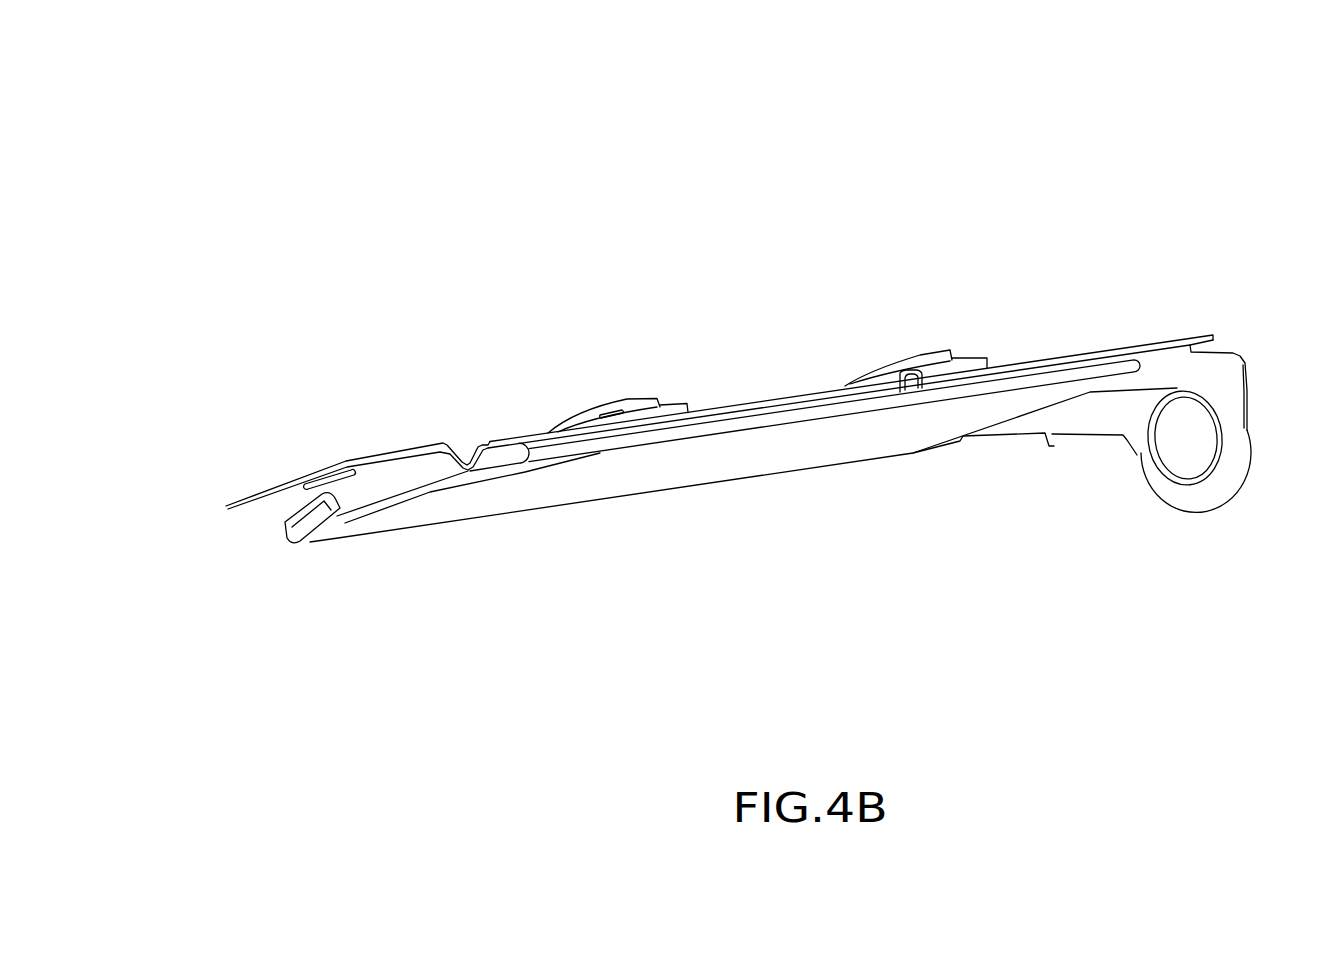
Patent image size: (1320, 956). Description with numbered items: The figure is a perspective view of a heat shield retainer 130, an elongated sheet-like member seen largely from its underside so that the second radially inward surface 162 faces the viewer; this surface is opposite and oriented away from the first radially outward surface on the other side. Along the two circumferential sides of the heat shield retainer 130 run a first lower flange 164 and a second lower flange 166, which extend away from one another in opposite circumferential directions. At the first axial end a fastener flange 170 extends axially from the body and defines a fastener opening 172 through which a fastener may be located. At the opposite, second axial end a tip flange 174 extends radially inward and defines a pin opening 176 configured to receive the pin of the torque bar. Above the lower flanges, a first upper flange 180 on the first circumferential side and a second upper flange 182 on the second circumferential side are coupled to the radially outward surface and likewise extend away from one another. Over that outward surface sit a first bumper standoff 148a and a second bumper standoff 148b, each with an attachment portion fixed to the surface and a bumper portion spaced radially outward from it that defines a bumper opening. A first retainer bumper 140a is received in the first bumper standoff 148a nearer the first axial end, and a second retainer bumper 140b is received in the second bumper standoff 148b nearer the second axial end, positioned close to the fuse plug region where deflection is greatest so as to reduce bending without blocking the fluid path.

The heat shield retainer 130 is at (1177, 162).
The second radially inward surface 162 is at (677, 468).
The first lower flange 164 is at (853, 408).
The second lower flange 166 is at (295, 540).
The fastener flange 170 is at (388, 453).
The fastener opening 172 is at (342, 486).
The tip flange 174 is at (1200, 497).
The pin opening 176 is at (1188, 447).
The first upper flange 180 is at (777, 398).
The second upper flange 182 is at (283, 523).
The first retainer bumper 140a is at (600, 405).
The second retainer bumper 140b is at (895, 358).
The first bumper standoff 148a is at (675, 405).
The second bumper standoff 148b is at (962, 364).